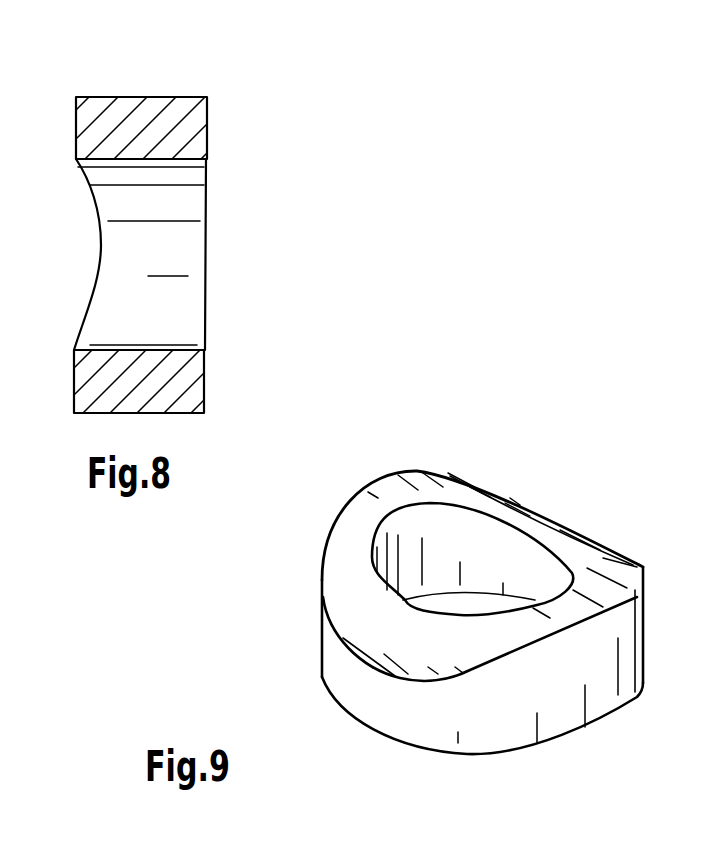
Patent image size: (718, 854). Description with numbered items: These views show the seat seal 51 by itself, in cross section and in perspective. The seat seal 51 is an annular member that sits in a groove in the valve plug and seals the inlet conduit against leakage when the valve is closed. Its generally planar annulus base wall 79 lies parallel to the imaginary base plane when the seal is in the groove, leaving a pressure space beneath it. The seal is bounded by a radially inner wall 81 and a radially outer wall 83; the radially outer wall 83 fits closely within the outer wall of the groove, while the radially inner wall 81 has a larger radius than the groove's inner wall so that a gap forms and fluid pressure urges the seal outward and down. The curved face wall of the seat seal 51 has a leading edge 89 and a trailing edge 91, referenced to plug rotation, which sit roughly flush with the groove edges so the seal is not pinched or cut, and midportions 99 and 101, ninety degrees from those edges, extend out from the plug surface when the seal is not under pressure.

In FIG. 8, the seat seal 51 is at (143, 135).
In FIG. 9, the seat seal 51 is at (580, 683).
In FIG. 8, the base wall 79 is at (208, 132).
In FIG. 9, the base wall 79 is at (523, 750).
In FIG. 8, the radially inner wall 81 is at (160, 349).
In FIG. 9, the radially inner wall 81 is at (498, 547).
In FIG. 8, the radially outer wall 83 is at (118, 96).
In FIG. 9, the radially outer wall 83 is at (425, 720).
In FIG. 9, the leading edge 89 is at (357, 662).
In FIG. 9, the trailing edge 91 is at (603, 548).
In FIG. 9, the midportion 99 is at (640, 600).
In FIG. 9, the midportion 101 is at (383, 480).